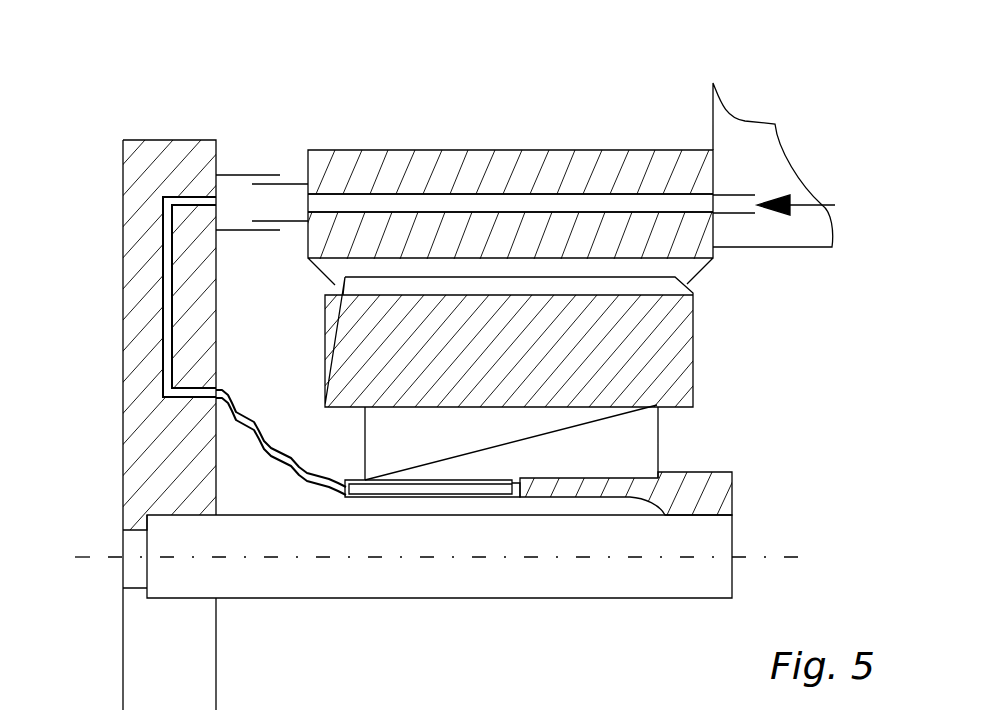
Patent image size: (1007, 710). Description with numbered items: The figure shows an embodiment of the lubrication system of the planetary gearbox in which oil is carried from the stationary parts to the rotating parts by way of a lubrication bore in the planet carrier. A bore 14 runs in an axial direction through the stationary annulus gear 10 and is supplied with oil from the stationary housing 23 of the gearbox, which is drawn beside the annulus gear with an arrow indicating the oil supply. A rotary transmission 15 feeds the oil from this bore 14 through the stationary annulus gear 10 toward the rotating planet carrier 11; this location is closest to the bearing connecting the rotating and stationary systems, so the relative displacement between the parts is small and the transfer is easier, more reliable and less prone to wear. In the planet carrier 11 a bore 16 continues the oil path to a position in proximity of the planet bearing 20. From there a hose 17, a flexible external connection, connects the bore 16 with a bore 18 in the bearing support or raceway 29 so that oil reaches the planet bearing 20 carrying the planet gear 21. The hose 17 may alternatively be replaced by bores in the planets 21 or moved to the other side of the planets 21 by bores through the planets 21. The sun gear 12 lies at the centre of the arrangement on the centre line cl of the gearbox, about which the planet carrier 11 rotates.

The annulus gear 10 is at (483, 167).
The planet carrier 11 is at (165, 475).
The sun gear 12 is at (733, 537).
The bore in the annulus gear 14 is at (550, 200).
The rotary transmission 15 is at (262, 175).
The bore in the planet carrier 16 is at (165, 318).
The hose 17 is at (263, 434).
The bore in the planet shaft 18 is at (445, 497).
The planet bearings 20 is at (397, 465).
The planet gear 21 is at (693, 308).
The stationary housing of the gearbox 23 is at (757, 155).
The bearing support or raceway 29 is at (693, 483).
The centre line of gearbox cl is at (778, 557).